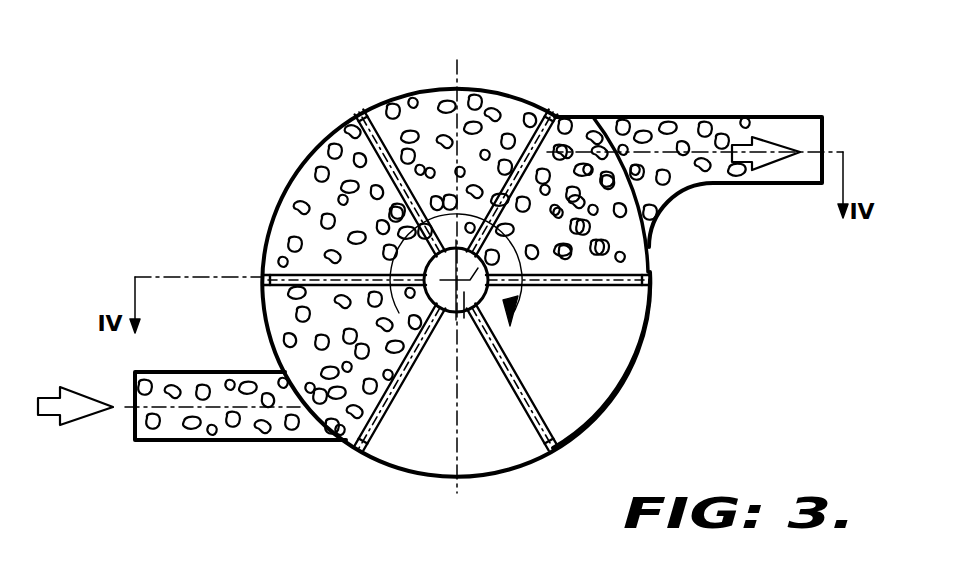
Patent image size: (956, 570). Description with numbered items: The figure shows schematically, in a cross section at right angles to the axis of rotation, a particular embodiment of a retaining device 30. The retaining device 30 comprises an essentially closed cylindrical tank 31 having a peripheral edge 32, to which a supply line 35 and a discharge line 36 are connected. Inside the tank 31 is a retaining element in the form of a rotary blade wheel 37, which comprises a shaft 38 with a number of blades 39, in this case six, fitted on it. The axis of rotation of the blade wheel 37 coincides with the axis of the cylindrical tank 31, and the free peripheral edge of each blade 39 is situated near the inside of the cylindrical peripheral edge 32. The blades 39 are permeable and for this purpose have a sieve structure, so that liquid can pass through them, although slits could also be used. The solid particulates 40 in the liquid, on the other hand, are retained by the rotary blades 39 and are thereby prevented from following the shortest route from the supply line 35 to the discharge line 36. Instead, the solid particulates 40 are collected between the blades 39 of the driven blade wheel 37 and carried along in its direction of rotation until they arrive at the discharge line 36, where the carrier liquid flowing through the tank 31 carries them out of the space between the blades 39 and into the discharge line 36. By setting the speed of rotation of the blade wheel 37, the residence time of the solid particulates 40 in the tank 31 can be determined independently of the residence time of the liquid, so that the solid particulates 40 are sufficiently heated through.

The retaining device 30 is at (287, 128).
The cylindrical tank 31 is at (527, 93).
The peripheral edge 32 is at (631, 368).
The supply line 35 is at (190, 442).
The discharge line 36 is at (702, 117).
The rotary blade wheel 37 is at (441, 322).
The shaft 38 is at (465, 293).
The blades 39 is at (381, 100).
The solid particulates 40 is at (600, 138).